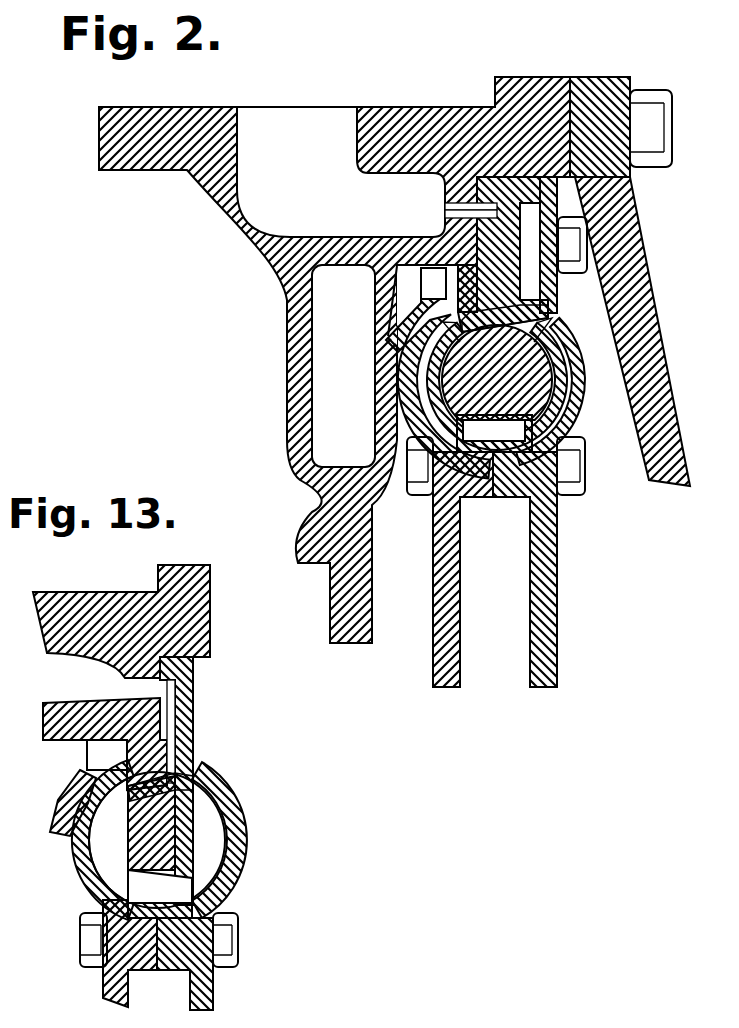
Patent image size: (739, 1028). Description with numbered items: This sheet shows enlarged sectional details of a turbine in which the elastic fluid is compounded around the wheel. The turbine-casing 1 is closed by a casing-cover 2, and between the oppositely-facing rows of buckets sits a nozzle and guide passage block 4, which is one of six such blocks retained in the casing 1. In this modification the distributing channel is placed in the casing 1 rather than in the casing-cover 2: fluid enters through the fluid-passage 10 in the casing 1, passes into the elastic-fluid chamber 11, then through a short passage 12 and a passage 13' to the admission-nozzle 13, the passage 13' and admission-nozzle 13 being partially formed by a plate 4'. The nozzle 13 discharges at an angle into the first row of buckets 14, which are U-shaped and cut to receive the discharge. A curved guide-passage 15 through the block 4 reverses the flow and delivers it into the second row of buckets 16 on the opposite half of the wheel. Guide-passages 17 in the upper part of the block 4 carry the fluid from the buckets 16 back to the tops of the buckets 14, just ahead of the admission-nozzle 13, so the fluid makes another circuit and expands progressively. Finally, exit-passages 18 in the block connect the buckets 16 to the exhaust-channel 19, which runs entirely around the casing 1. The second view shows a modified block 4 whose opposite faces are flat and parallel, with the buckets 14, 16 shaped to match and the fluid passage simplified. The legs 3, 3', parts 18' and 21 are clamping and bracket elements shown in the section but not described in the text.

In FIG. 2, the turbine-casing 1 is at (513, 88).
In FIG. 13, the turbine-casing 1 is at (210, 597).
In FIG. 2, the casing-cover 2 is at (605, 88).
In FIG. 2, the clamp leg 3 is at (450, 562).
In FIG. 13, the clamp leg 3 is at (113, 953).
In FIG. 2, the clamp leg 3' is at (544, 562).
In FIG. 13, the clamp leg 3' is at (205, 961).
In FIG. 2, the nozzle and guide passage block 4 is at (520, 384).
In FIG. 13, the nozzle and guide passage block 4 is at (199, 781).
In FIG. 2, the plate 4' is at (532, 254).
In FIG. 2, the fluid-passage 10 is at (341, 172).
In FIG. 2, the elastic-fluid chamber 11 is at (391, 205).
In FIG. 13, the elastic-fluid chamber 11 is at (105, 721).
In FIG. 2, the passage 12 is at (483, 218).
In FIG. 13, the passage 12 is at (140, 684).
In FIG. 2, the admission-nozzle 13 is at (536, 318).
In FIG. 13, the admission-nozzle 13 is at (185, 777).
In FIG. 2, the passage 13' is at (449, 206).
In FIG. 13, the passage 13' is at (199, 728).
In FIG. 2, the first row of buckets 14 is at (425, 385).
In FIG. 13, the first row of buckets 14 is at (97, 868).
In FIG. 2, the guide-passage 15 is at (500, 430).
In FIG. 13, the guide-passage 15 is at (160, 894).
In FIG. 2, the second row of buckets 16 is at (570, 380).
In FIG. 13, the second row of buckets 16 is at (227, 847).
In FIG. 2, the guide-passages 17 is at (497, 372).
In FIG. 13, the guide-passages 17 is at (157, 840).
In FIG. 2, the exit-passages 18 is at (395, 283).
In FIG. 13, the exit-passages 18 is at (107, 755).
In FIG. 2, the key lip 18' is at (403, 306).
In FIG. 13, the key lip 18' is at (65, 755).
In FIG. 2, the exhaust-channel 19 is at (343, 366).
In FIG. 13, the exhaust-channel 19 is at (64, 803).
In FIG. 2, the bracket arm 21 is at (592, 183).